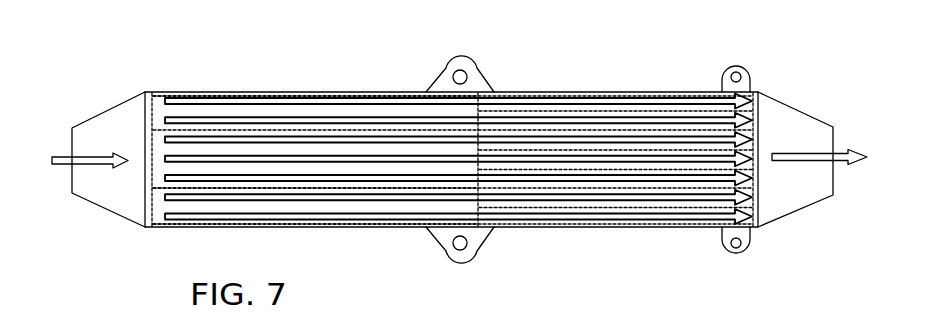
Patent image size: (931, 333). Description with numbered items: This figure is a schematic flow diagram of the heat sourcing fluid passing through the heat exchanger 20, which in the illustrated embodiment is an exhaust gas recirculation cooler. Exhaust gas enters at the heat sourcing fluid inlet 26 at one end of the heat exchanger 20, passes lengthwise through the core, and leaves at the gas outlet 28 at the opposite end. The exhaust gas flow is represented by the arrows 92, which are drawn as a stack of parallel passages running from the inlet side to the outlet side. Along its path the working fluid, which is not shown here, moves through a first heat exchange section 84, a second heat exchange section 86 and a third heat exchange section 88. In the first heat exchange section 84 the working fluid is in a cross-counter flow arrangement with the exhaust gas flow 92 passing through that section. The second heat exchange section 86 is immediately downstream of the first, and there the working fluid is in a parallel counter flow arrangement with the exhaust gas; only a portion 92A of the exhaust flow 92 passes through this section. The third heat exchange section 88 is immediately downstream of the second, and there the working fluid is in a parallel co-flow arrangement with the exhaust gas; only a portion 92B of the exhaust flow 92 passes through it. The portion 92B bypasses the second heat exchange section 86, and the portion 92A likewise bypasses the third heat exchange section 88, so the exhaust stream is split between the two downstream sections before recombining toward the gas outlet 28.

The heat exchanger 20 is at (361, 66).
The heat sourcing fluid inlet 26 is at (69, 137).
The gas outlet 28 is at (833, 135).
The first heat exchange section 84 is at (667, 212).
The second heat exchange section 86 is at (267, 187).
The third heat exchange section 88 is at (184, 103).
The exhaust gas flow 92 is at (100, 157).
The portion of the exhaust flow 92A is at (535, 157).
The portion of the exhaust flow 92B is at (610, 117).